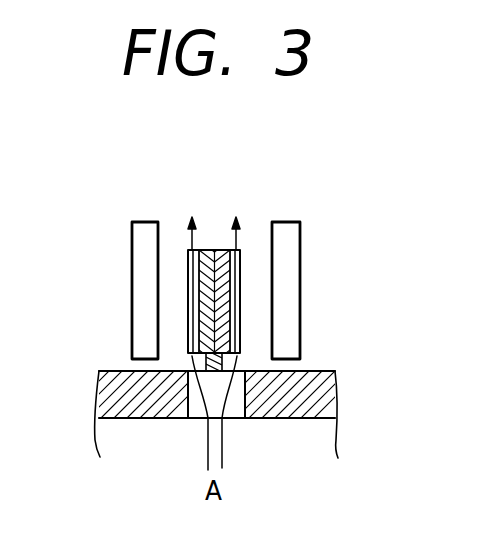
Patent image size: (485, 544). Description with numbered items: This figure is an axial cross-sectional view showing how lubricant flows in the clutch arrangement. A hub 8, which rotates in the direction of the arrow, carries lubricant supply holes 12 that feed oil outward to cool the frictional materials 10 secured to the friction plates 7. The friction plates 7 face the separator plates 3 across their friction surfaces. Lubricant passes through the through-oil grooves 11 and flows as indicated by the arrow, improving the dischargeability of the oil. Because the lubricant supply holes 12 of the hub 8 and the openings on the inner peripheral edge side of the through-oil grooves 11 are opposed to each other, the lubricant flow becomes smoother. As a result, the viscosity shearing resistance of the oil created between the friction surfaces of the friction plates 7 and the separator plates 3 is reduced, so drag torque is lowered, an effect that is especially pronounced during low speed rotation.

The separator plates 3 is at (134, 253).
The friction plates 7 is at (210, 234).
The hub 8 is at (328, 385).
The frictional materials 10 is at (199, 318).
The through-oil grooves 11 is at (242, 325).
The lubricant supply holes 12 is at (232, 400).